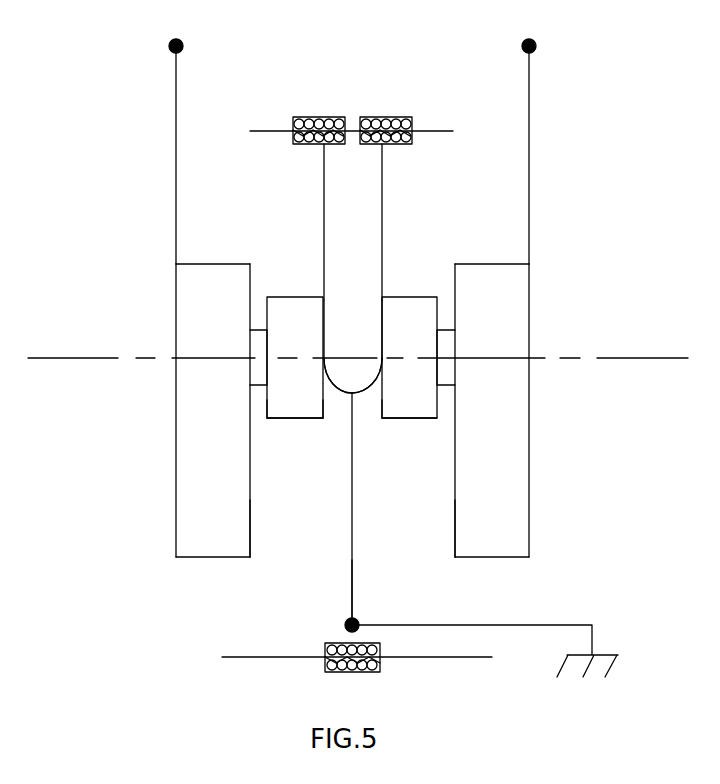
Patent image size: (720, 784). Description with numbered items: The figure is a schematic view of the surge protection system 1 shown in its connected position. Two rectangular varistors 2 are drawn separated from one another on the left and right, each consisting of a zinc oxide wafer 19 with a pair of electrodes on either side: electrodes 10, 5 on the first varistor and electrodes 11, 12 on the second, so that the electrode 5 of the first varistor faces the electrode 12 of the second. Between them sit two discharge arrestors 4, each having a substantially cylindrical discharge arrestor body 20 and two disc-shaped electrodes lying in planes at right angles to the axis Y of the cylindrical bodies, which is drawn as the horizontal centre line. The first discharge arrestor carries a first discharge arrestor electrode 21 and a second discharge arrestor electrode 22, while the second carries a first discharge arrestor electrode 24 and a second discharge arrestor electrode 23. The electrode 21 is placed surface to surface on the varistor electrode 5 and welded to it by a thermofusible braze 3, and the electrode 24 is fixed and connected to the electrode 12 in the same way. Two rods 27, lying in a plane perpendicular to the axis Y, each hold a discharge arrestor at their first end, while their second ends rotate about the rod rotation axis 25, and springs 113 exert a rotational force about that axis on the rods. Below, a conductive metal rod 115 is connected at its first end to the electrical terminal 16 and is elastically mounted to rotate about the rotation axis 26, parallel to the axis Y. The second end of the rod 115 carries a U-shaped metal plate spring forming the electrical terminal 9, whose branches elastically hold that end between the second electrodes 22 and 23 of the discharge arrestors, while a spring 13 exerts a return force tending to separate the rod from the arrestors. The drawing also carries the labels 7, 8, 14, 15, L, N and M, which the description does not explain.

The system 1 is at (97, 270).
The varistor 2 is at (203, 408).
The thermofusible braze 3 is at (260, 345).
The discharge arrestor 4 is at (291, 400).
The electrode 5 is at (252, 540).
The first movable contact arm 7 is at (326, 316).
The second movable contact arm 8 is at (380, 316).
The electrical terminal 9 is at (355, 470).
The electrode 10 is at (177, 538).
The electrode 11 is at (531, 540).
The electrode 12 is at (455, 550).
The spring 13 is at (338, 643).
The line terminal L 14 is at (169, 46).
The neutral terminal N 15 is at (537, 46).
The electrical terminal 16 is at (356, 620).
The zinc oxide wafer 19 is at (200, 482).
The discharge arrestor body 20 is at (284, 296).
The first discharge arrestor electrode 21 is at (262, 412).
The second discharge arrestor electrode 22 is at (330, 408).
The second discharge arrestor electrode 23 is at (358, 400).
The first discharge arrestor electrode 24 is at (428, 405).
The rod rotation axis 25 is at (262, 130).
The rotation axis 26 is at (468, 658).
The rod 27 is at (323, 163).
The spring 113 is at (384, 116).
The conductive metal rod 115 is at (350, 588).
The line conductor L is at (175, 135).
The neutral conductor N is at (527, 135).
The ground / earth M is at (503, 651).
The axis Y is at (643, 357).